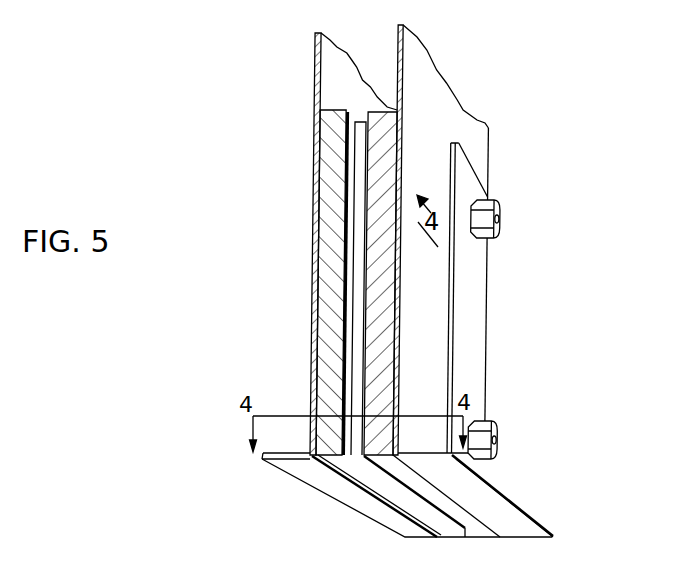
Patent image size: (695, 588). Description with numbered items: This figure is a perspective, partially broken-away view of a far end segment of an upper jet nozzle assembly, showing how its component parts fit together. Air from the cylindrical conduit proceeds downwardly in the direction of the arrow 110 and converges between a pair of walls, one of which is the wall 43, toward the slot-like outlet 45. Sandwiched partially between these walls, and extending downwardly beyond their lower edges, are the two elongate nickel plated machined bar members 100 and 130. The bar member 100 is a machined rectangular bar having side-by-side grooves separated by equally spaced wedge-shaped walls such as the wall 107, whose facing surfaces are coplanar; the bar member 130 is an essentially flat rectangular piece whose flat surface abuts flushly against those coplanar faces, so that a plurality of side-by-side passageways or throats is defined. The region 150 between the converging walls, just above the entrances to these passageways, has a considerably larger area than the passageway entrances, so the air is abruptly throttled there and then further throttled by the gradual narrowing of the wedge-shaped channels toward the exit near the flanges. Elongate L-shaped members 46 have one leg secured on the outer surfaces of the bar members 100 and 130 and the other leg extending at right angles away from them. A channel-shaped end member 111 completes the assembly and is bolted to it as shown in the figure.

The arrow 110 is at (363, 0).
The wall 43 is at (322, 56).
The region 150 is at (355, 103).
The bar member 100 is at (337, 175).
The bar member 130 is at (380, 203).
The channel-shaped end member 111 is at (474, 346).
The L-shaped member 46 is at (326, 483).
The slot-like outlet 45 is at (432, 505).
The wedge-shaped wall 107 is at (407, 520).